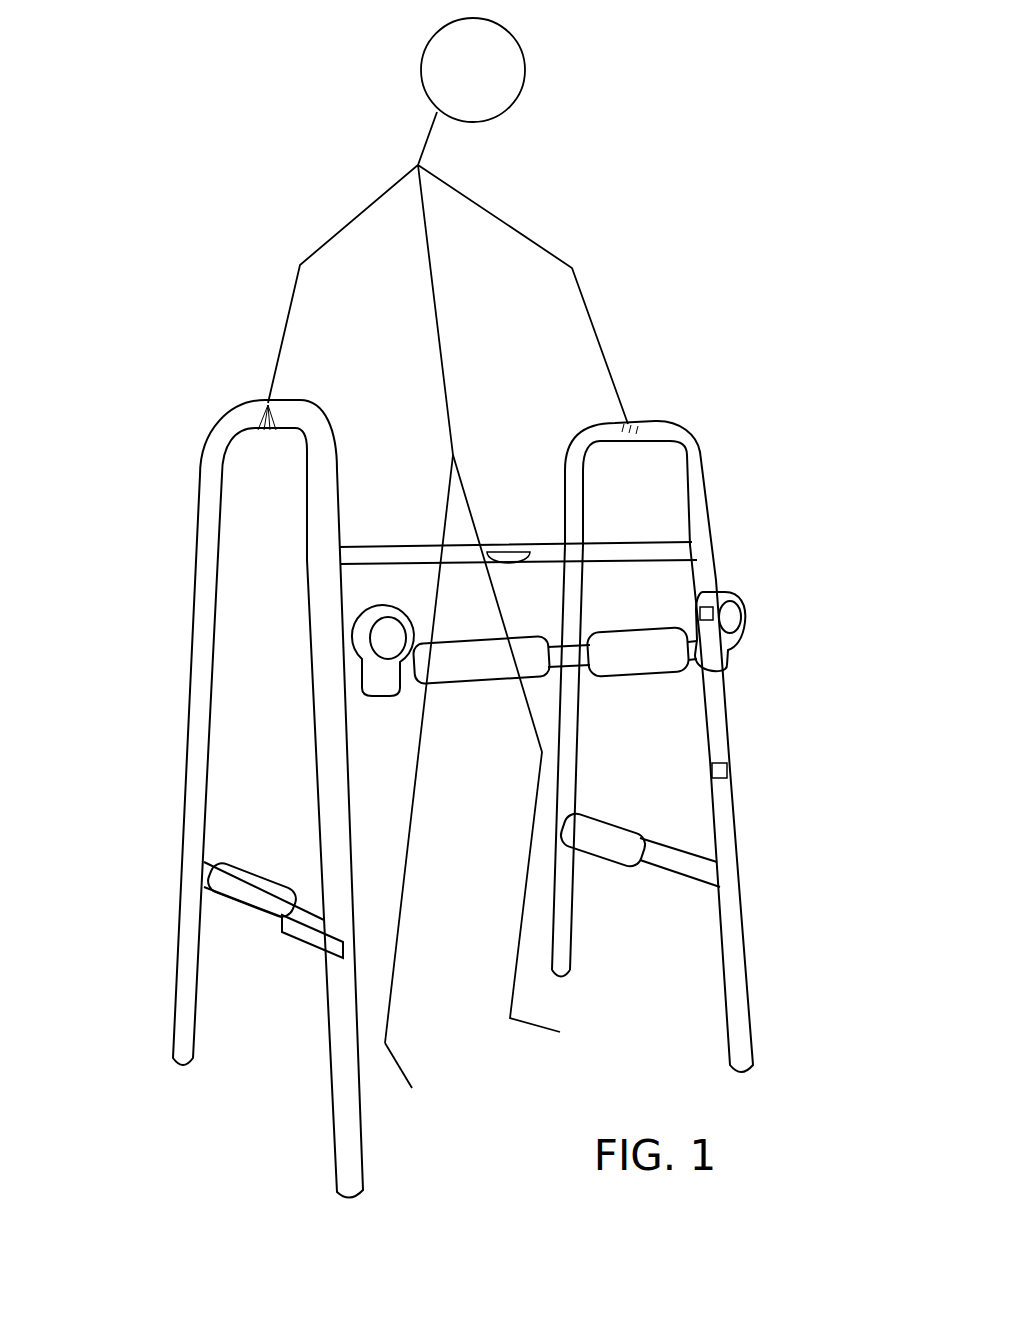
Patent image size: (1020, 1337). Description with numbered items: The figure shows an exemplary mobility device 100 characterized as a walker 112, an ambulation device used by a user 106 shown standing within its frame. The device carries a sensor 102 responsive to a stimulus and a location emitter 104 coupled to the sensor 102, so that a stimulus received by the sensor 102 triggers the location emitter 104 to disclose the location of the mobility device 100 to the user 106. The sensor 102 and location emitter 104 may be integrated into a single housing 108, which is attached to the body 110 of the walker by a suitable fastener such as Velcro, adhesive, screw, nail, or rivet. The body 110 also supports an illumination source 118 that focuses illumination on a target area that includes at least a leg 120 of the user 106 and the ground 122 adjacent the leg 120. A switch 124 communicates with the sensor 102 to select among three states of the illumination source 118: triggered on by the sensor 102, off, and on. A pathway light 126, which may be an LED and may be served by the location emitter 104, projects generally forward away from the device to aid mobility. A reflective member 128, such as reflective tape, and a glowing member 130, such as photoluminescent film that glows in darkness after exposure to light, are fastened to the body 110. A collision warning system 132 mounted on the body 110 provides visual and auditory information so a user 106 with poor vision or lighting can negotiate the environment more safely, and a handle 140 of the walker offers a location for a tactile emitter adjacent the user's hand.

The mobility device 100 is at (437, 675).
The sensor 102 is at (767, 589).
The location emitter 104 is at (736, 613).
The user 106 is at (445, 579).
The housing 108 is at (383, 678).
The body 110 is at (252, 898).
The walker 112 is at (768, 935).
The illumination source 118 is at (240, 870).
The leg 120 is at (380, 1037).
The ground 122 is at (437, 1097).
The switch 124 is at (713, 606).
The pathway light 126 is at (490, 647).
The reflective member 128 is at (728, 770).
The glowing member 130 is at (330, 955).
The collision warning system 132 is at (475, 549).
The handle 140 is at (650, 425).